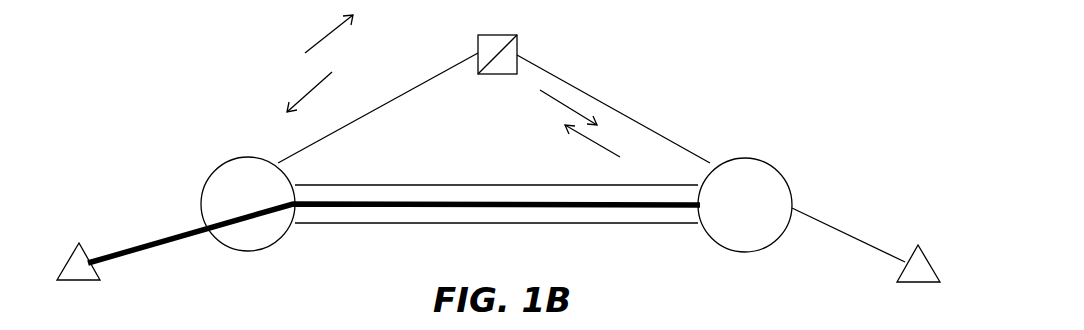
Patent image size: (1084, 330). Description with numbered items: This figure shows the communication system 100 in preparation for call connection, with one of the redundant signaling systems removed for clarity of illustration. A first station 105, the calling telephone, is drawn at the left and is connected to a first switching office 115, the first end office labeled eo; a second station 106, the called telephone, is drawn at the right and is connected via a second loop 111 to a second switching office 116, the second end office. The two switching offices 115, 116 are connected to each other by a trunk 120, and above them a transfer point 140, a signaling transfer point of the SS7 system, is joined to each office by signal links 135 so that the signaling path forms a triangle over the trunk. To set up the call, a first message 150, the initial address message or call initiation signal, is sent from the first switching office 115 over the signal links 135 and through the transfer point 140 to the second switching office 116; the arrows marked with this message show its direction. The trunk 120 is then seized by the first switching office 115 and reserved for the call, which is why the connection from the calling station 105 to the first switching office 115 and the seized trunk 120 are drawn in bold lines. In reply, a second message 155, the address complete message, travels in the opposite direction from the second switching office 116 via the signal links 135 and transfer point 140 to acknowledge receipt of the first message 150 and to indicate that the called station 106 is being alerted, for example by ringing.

The communication system 100 is at (683, 92).
The first station 105 is at (80, 282).
The second station 106 is at (920, 284).
The second loop 111 is at (833, 222).
The first switching office 115 is at (227, 163).
The second switching office 116 is at (765, 164).
The trunk 120 is at (410, 208).
The signal links 135 is at (427, 80).
The transfer point 140 is at (497, 35).
The first message 150 is at (330, 33).
The second message 155 is at (308, 94).